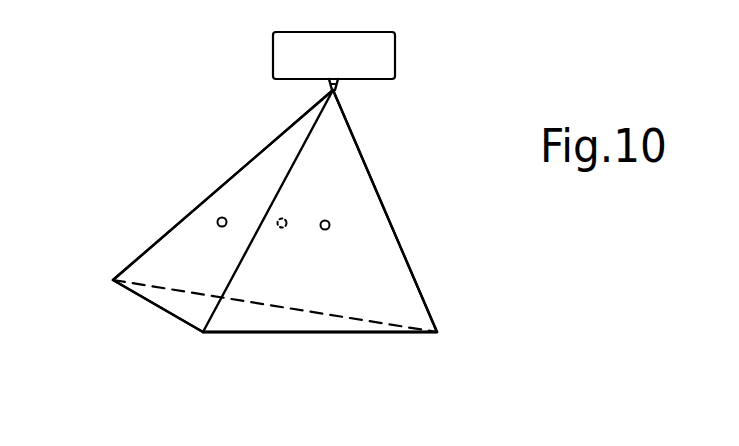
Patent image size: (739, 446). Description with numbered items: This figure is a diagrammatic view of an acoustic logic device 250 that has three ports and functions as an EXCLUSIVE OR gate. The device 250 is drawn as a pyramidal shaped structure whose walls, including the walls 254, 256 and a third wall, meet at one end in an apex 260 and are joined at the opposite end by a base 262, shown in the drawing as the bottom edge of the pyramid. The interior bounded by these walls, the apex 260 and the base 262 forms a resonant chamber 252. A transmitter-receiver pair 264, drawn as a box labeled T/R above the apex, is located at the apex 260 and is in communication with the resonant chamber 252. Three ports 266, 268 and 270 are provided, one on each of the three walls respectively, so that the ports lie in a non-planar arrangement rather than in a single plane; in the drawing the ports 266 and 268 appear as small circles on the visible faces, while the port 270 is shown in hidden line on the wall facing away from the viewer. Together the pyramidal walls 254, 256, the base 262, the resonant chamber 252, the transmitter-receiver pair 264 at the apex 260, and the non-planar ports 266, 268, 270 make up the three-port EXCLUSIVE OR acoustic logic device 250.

The acoustic logic device 250 is at (153, 150).
The resonant chamber 252 is at (380, 258).
The wall 254 is at (267, 317).
The wall 256 is at (148, 262).
The apex 260 is at (340, 96).
The base 262 is at (342, 332).
The transmitter-receiver pair 264 is at (273, 50).
The port 266 is at (329, 222).
The port 268 is at (218, 219).
The port 270 is at (281, 218).